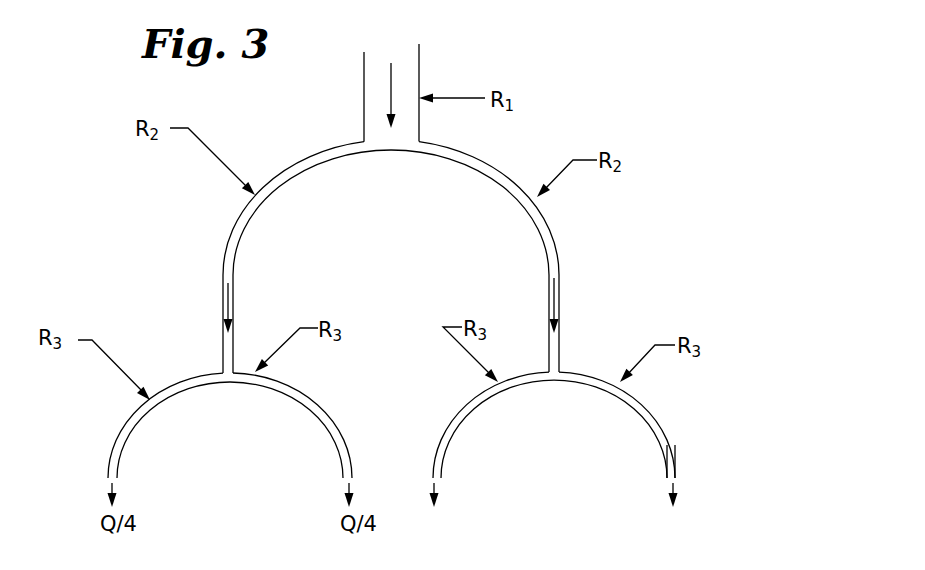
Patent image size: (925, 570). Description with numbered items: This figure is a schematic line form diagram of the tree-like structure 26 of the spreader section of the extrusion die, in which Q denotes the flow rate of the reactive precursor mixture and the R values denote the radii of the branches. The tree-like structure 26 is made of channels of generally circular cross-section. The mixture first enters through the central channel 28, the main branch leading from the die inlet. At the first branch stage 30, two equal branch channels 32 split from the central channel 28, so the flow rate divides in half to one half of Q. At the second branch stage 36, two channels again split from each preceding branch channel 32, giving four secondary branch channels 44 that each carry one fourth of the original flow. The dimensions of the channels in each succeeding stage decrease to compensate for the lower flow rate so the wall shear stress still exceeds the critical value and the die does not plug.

The tree-like structure 26 is at (578, 133).
The central channel 28 is at (428, 73).
The first branch stage 30 is at (627, 384).
The branch channels 32 is at (570, 257).
The second branch stage 36 is at (690, 418).
The secondary branch channels 44 is at (682, 459).